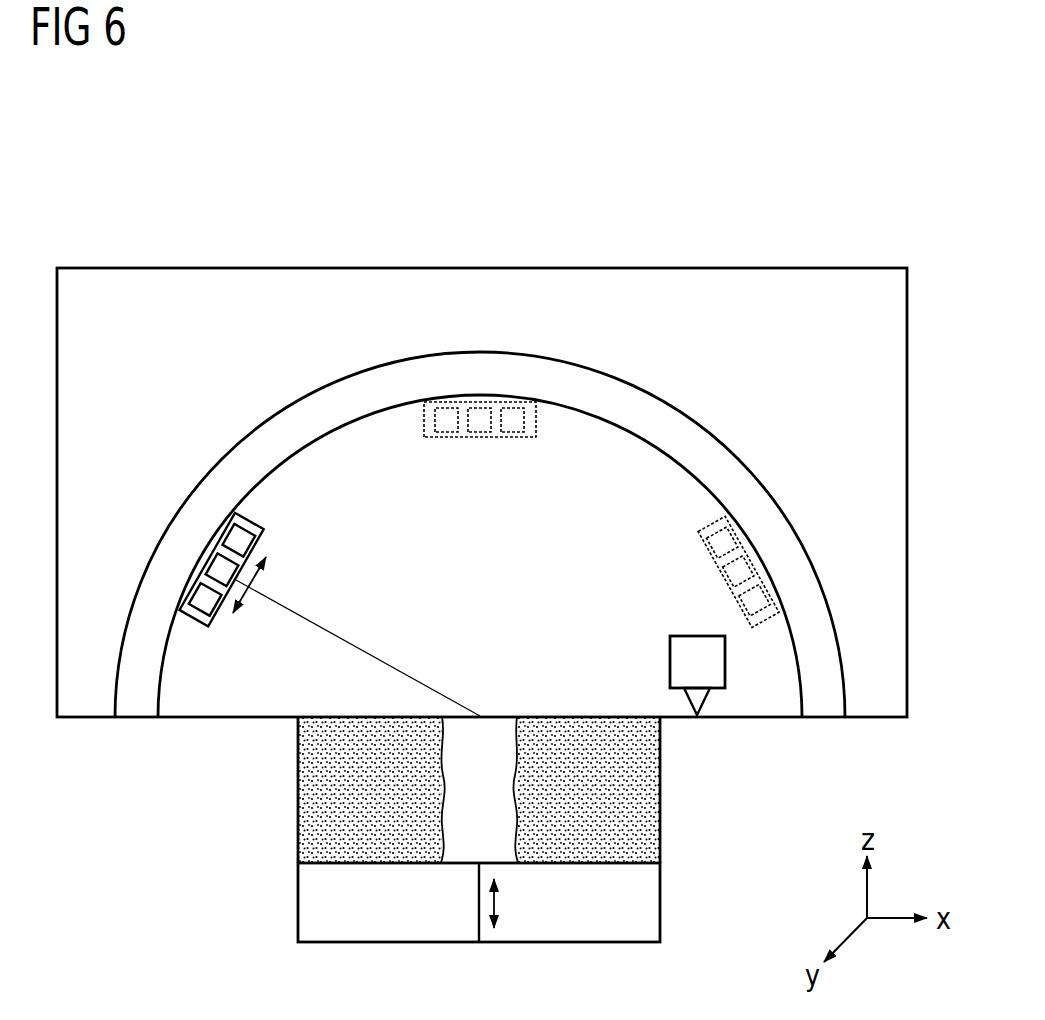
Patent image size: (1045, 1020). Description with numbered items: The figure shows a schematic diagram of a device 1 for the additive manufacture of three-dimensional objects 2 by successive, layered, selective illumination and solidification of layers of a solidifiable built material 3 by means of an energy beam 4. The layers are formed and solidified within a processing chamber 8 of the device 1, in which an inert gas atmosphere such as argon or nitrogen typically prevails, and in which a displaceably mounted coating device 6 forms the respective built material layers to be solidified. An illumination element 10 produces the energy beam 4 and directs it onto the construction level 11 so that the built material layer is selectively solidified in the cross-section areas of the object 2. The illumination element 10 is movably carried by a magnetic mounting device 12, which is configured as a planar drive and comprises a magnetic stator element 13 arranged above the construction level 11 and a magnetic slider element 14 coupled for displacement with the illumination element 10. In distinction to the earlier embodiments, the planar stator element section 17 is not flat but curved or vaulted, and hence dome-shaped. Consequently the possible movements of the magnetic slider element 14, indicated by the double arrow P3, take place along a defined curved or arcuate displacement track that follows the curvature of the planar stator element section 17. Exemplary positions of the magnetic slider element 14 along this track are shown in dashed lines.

The device 1 is at (672, 130).
The processing chamber 8 is at (730, 268).
The magnetic stator element 13 is at (292, 376).
The magnetic mounting device 12 is at (691, 412).
The planar stator element section 17 is at (608, 427).
The magnetic slider element 14 is at (257, 520).
The illumination element 10 is at (246, 548).
The double arrow P3 is at (253, 593).
The energy beam 4 is at (372, 652).
The construction level 11 is at (489, 706).
The coating device 6 is at (670, 662).
The three-dimensional object 2 is at (453, 797).
The built material 3 is at (650, 828).